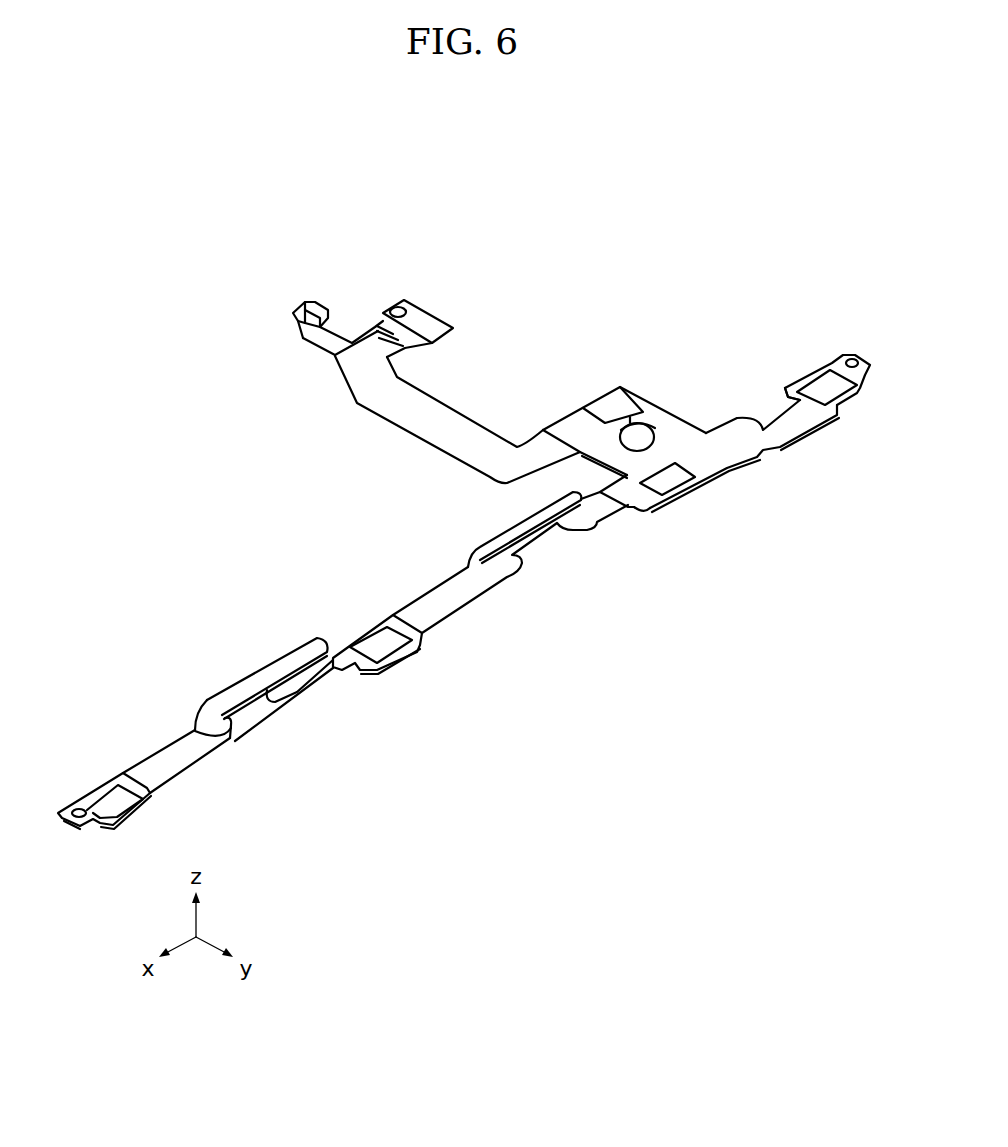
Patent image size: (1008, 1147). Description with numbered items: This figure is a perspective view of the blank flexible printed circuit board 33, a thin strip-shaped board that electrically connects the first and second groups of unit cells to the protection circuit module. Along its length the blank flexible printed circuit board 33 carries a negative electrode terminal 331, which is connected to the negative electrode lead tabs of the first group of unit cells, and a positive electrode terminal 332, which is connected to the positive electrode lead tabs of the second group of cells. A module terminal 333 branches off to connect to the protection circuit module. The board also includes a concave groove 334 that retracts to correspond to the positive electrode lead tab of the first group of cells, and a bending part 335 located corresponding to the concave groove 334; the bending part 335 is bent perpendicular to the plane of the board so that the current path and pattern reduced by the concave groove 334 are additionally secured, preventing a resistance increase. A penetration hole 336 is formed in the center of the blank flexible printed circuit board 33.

The blank flexible printed circuit board 33 is at (711, 277).
The negative electrode terminal 331 is at (124, 802).
The positive electrode terminal 332 is at (810, 387).
The module terminal 333 is at (297, 303).
The concave groove 334 is at (200, 727).
The bending part 335 is at (247, 684).
The penetration hole 336 is at (650, 440).